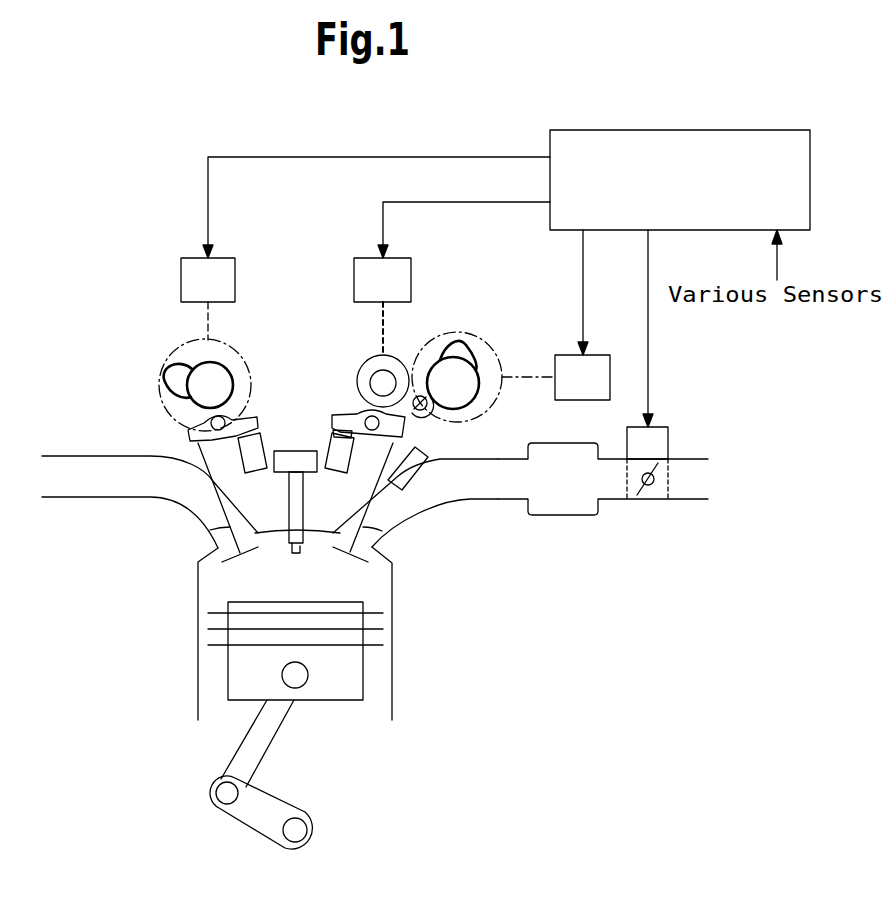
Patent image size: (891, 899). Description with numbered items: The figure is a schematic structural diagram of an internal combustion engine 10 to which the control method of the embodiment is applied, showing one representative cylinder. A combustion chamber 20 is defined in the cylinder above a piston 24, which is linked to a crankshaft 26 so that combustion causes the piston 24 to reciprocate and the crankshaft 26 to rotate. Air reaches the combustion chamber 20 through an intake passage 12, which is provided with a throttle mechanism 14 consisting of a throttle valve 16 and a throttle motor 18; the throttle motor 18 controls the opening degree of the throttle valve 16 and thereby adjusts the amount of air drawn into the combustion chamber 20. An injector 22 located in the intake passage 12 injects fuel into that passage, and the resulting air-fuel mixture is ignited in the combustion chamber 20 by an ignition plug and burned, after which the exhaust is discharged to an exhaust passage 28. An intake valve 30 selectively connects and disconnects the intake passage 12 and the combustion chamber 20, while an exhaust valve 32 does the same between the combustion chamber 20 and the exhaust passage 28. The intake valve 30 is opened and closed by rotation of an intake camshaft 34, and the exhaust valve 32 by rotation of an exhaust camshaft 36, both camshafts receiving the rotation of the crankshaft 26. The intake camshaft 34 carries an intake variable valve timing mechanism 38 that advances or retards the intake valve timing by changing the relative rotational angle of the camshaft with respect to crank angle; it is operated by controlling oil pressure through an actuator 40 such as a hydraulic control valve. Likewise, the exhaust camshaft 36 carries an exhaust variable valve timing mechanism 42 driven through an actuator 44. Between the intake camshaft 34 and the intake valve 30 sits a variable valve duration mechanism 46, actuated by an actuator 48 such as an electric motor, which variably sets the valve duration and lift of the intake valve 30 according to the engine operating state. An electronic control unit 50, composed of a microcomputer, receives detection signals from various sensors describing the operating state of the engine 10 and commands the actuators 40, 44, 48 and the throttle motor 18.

The internal combustion engine 10 is at (161, 683).
The intake passage 12 is at (462, 499).
The throttle mechanism 14 is at (693, 538).
The throttle valve 16 is at (642, 498).
The throttle motor 18 is at (670, 443).
The combustion chamber 20 is at (218, 577).
The injector 22 is at (416, 470).
The piston 24 is at (345, 700).
The crankshaft 26 is at (305, 817).
The exhaust passage 28 is at (134, 500).
The intake valve 30 is at (362, 508).
The exhaust valve 32 is at (215, 535).
The intake camshaft 34 is at (487, 396).
The exhaust camshaft 36 is at (197, 390).
The intake variable valve timing mechanism 38 is at (483, 333).
The actuator 40 is at (598, 355).
The exhaust variable valve timing mechanism 42 is at (168, 357).
The actuator 44 is at (222, 258).
The variable valve duration mechanism 46 is at (362, 370).
The actuator 48 is at (395, 258).
The electronic control unit 50 is at (790, 130).